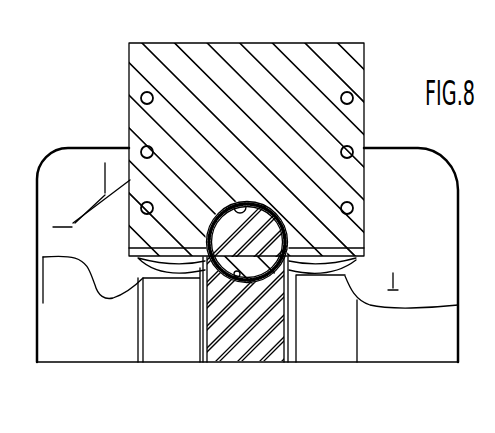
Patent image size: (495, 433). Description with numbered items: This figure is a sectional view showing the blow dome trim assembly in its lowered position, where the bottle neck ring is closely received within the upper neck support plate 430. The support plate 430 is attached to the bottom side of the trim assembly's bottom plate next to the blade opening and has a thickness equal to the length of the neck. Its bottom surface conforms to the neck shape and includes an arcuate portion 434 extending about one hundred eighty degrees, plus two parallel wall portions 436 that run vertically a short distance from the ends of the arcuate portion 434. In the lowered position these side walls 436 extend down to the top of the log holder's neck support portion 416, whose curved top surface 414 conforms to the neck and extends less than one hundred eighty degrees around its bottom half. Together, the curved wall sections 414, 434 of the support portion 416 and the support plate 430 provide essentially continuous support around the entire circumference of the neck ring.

The upper neck support plate 430 is at (130, 81).
The arcuate portion 434 is at (222, 207).
The top surface 414 is at (237, 283).
The parallel wall portions 436 is at (129, 248).
The support portion 416 is at (275, 355).